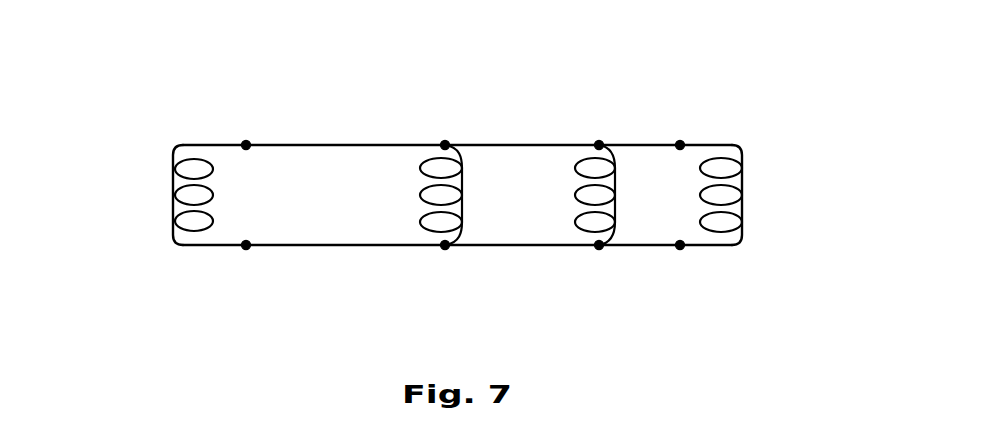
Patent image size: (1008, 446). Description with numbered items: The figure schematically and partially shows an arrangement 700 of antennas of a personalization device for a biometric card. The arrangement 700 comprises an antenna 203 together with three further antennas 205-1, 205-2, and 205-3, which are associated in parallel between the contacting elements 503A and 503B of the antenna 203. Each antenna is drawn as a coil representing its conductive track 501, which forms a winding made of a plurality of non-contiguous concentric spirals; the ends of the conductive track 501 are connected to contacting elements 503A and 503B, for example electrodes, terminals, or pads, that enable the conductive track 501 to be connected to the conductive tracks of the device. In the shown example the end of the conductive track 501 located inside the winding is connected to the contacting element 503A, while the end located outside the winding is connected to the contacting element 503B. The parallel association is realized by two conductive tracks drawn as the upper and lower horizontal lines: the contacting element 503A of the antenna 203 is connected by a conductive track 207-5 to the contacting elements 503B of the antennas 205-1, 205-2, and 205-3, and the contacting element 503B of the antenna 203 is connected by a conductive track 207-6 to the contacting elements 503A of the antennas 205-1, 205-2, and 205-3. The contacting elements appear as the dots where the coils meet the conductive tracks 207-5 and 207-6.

The arrangement of antennas 700 is at (742, 133).
The antenna 203 is at (157, 196).
The antenna 205-1 is at (412, 135).
The antenna 205-2 is at (552, 118).
The antenna 205-3 is at (748, 197).
The conductive track 207-5 is at (333, 245).
The conductive track 207-6 is at (334, 145).
The conductive track 501 is at (172, 158).
The contacting element 503A is at (446, 145).
The contacting element 503B is at (246, 145).